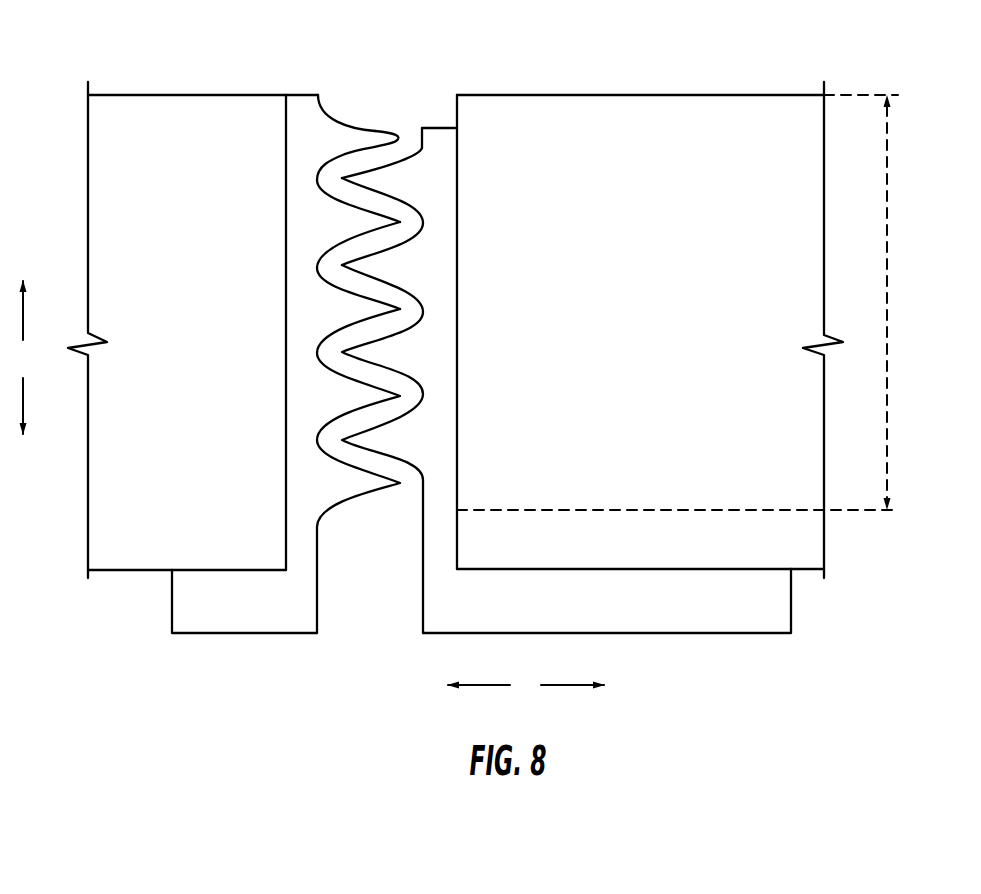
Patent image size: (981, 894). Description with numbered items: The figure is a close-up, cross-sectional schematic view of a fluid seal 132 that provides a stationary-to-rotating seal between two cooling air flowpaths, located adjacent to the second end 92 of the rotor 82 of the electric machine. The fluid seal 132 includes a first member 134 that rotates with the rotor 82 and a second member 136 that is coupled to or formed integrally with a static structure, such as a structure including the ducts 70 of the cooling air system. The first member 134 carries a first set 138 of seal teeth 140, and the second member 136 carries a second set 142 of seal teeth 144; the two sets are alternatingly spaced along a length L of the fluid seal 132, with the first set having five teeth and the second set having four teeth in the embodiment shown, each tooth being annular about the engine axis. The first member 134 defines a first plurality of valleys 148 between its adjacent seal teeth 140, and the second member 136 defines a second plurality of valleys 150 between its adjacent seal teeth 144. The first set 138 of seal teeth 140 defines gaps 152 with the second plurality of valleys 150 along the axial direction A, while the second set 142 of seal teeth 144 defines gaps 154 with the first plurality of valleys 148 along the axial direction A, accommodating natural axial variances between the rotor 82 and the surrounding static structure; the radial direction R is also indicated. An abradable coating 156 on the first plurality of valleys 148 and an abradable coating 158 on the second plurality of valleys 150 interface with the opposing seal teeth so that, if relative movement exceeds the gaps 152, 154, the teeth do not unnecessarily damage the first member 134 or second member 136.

The ducts 70 is at (646, 254).
The rotor 82 is at (138, 247).
The second end 92 is at (201, 165).
The fluid seal 132 is at (419, 50).
The first member 134 is at (285, 401).
The second member 136 is at (458, 308).
The first set of seal teeth 138 is at (364, 108).
The seal teeth 140 is at (352, 130).
The second set of seal teeth 142 is at (380, 153).
The seal teeth 144 is at (423, 149).
The first plurality of valleys 148 is at (339, 192).
The second plurality of valleys 150 is at (409, 302).
The gaps 152 is at (408, 214).
The gaps 154 is at (333, 282).
The abradable coating 156 is at (316, 262).
The abradable coating 158 is at (424, 318).
The length L is at (888, 312).
The radial direction R is at (23, 357).
The axial direction A is at (526, 685).